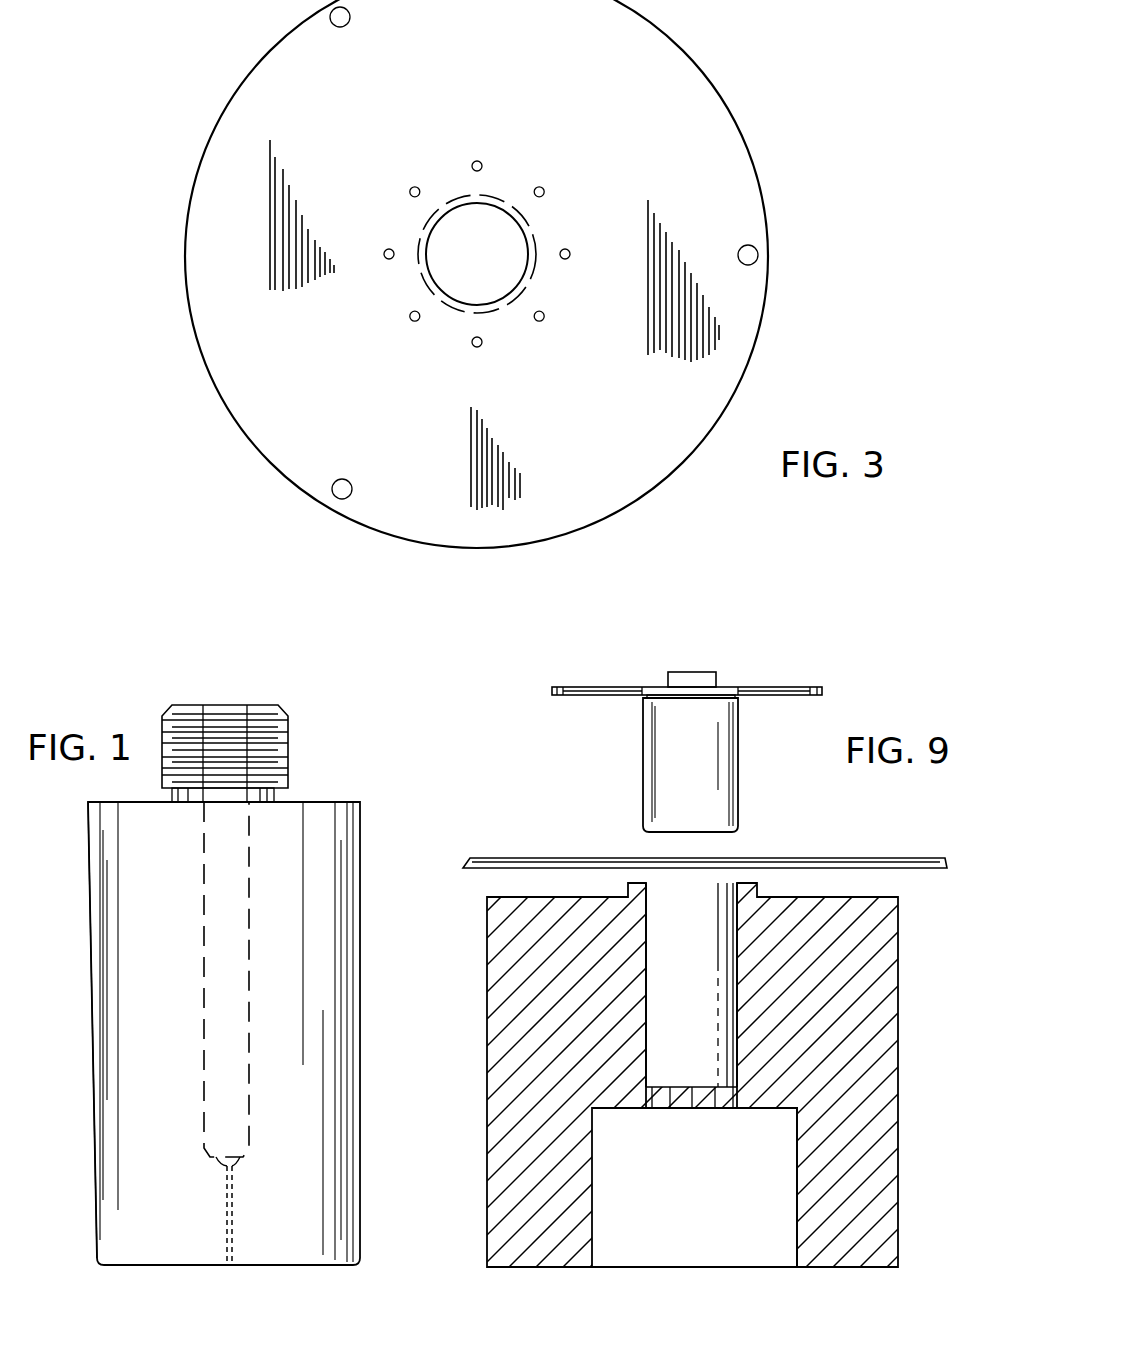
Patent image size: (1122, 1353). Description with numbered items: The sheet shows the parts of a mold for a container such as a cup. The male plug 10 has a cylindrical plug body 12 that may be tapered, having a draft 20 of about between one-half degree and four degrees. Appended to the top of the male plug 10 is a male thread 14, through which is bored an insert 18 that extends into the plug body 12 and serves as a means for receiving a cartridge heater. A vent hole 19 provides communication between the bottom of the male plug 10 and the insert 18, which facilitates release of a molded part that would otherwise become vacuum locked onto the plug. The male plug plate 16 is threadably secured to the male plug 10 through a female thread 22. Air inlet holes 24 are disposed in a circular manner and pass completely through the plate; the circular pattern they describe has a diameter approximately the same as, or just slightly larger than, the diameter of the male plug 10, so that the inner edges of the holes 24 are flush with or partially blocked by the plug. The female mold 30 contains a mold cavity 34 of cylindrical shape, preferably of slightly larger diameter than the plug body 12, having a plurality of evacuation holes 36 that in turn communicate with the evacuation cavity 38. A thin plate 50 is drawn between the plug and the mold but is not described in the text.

In FIG. 1, the male plug 10 is at (359, 722).
In FIG. 9, the male plug 10 is at (738, 740).
In FIG. 1, the plug body 12 is at (358, 1078).
In FIG. 1, the male thread 14 is at (288, 768).
In FIG. 3, the male plug plate 16 is at (772, 107).
In FIG. 1, the insert 18 is at (249, 985).
In FIG. 1, the vent hole 19 is at (232, 1225).
In FIG. 1, the draft 20 is at (97, 1208).
In FIG. 3, the female thread 22 is at (532, 236).
In FIG. 3, the air inlet holes 24 is at (389, 260).
In FIG. 9, the air inlet holes 24 is at (642, 687).
In FIG. 9, the female mold 30 is at (900, 1147).
In FIG. 9, the mold cavity 34 is at (692, 1030).
In FIG. 9, the evacuation holes 36 is at (700, 1065).
In FIG. 9, the evacuation cavity 38 is at (700, 1238).
In FIG. 9, the thin plate 50 is at (912, 858).